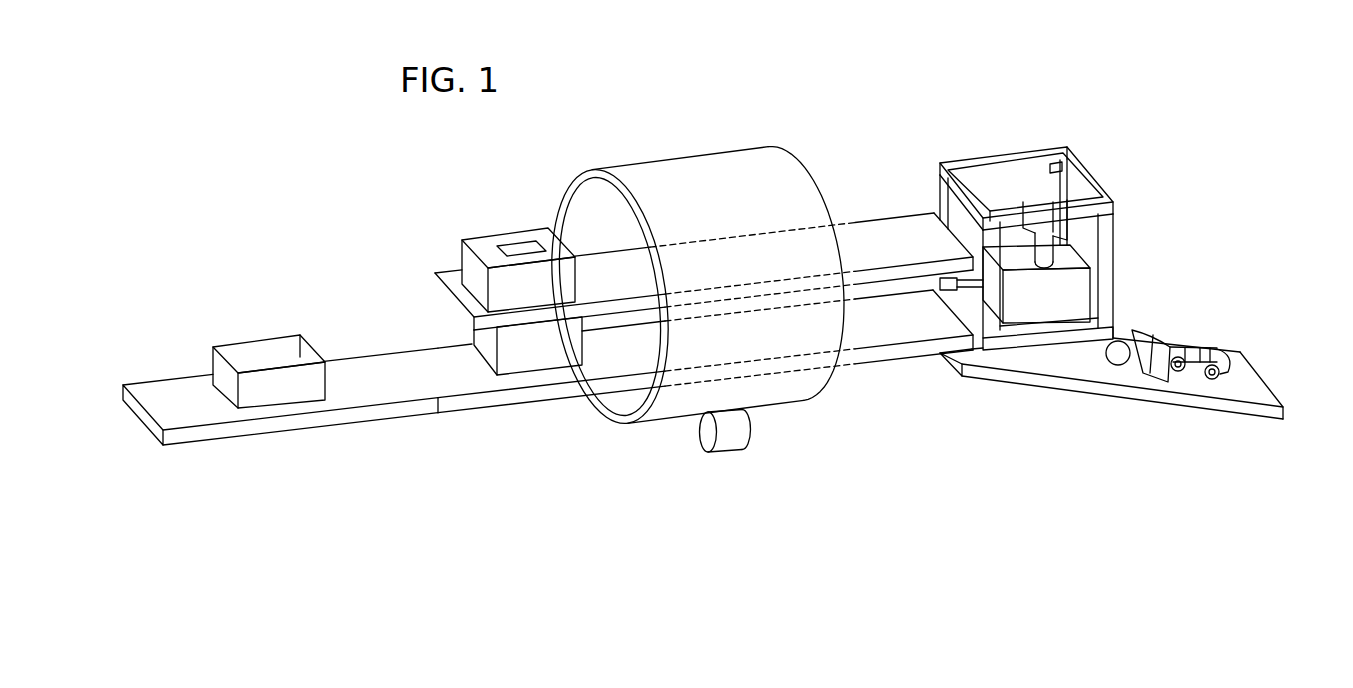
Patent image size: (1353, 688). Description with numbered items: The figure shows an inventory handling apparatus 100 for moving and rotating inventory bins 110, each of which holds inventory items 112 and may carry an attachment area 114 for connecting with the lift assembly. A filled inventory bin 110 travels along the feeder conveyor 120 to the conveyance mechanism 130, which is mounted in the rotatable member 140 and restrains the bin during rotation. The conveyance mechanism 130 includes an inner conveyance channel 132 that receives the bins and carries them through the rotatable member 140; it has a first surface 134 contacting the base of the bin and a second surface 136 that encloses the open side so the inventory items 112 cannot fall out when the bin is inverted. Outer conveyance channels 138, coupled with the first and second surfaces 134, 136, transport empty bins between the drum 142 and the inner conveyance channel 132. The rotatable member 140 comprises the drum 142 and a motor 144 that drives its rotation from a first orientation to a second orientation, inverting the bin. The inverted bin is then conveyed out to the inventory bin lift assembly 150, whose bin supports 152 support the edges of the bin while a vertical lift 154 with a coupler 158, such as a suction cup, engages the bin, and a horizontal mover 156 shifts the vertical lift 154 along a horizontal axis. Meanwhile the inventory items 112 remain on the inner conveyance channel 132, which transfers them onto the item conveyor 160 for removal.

The inventory handling apparatus 100 is at (968, 98).
The inventory bin 110 is at (297, 397).
The inventory items 112 is at (1177, 345).
The attachment area 114 is at (517, 243).
The feeder conveyor 120 is at (173, 435).
The conveyance mechanism 130 is at (402, 331).
The inner conveyance channel 132 is at (872, 316).
The first surface 134 is at (457, 383).
The second surface 136 is at (555, 325).
The outer conveyance channels 138 is at (836, 163).
The rotatable member 140 is at (782, 424).
The drum 142 is at (697, 157).
The motor 144 is at (730, 443).
The inventory bin lift assembly 150 is at (1068, 150).
The bin supports 152 is at (1103, 332).
The vertical lift 154 is at (1112, 205).
The horizontal mover 156 is at (1053, 228).
The coupler 158 is at (1053, 268).
The item conveyor 160 is at (1247, 390).